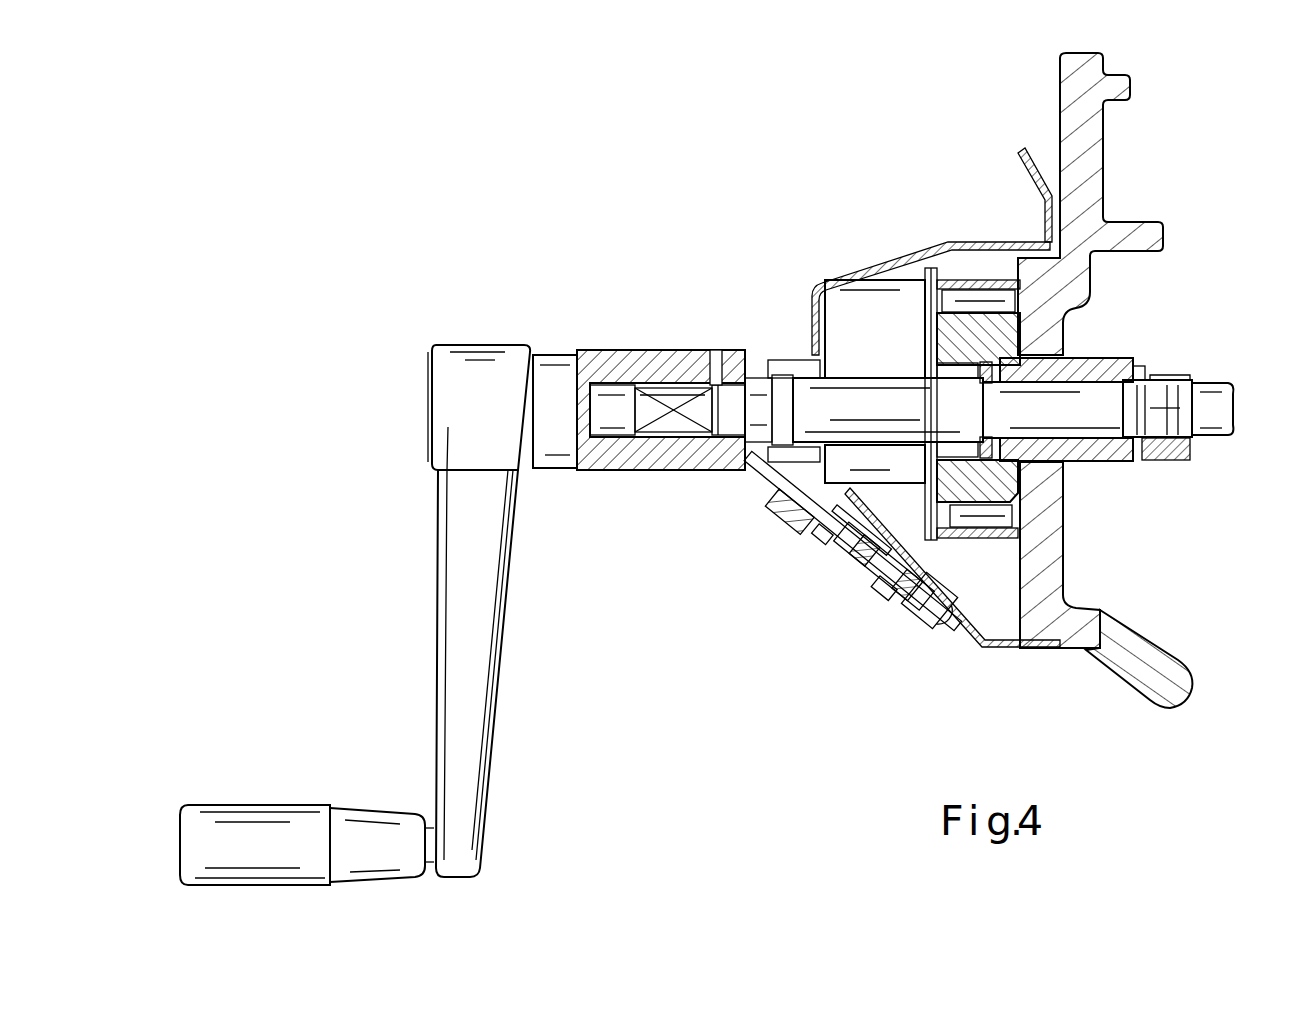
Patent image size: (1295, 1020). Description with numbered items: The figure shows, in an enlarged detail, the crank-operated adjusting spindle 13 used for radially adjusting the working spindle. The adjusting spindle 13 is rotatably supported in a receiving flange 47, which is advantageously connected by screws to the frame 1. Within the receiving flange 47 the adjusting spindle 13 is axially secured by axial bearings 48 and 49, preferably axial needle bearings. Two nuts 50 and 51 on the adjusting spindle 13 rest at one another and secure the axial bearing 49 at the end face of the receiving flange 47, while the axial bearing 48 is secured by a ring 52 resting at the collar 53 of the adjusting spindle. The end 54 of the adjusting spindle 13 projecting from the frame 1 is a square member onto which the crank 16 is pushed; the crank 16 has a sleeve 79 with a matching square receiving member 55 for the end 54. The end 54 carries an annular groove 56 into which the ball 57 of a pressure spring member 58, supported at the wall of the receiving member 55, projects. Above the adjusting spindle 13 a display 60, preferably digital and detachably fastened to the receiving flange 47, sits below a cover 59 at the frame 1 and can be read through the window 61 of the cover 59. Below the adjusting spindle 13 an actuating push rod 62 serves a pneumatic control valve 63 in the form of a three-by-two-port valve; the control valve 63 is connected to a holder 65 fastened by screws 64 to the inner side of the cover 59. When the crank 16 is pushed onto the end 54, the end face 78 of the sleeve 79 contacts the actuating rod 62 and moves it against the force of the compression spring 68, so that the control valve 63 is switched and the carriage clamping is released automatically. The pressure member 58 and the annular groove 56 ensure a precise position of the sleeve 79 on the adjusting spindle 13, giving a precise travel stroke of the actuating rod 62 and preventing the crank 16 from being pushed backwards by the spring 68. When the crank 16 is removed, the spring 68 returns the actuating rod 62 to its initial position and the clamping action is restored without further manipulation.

The frame 1 is at (1075, 105).
The adjusting spindle 13 is at (1207, 398).
The crank 16 is at (467, 567).
The receiving flange 47 is at (995, 488).
The axial bearing 48 is at (1063, 330).
The axial bearing 49 is at (1148, 462).
The nut 50 is at (1167, 463).
The nut 51 is at (1192, 452).
The ring 52 is at (937, 275).
The collar 53 is at (982, 396).
The end of the adjusting spindle 54 is at (661, 472).
The receiving member 55 is at (613, 385).
The annular groove 56 is at (723, 472).
The ball 57 is at (695, 352).
The pressure spring member 58 is at (717, 350).
The cover 59 is at (970, 242).
The display 60 is at (870, 300).
The window 61 is at (897, 282).
The actuating push rod 62 is at (806, 545).
The pneumatic control valve 63 is at (920, 585).
The screws 64 is at (840, 548).
The holder 65 is at (940, 600).
The compression spring 68 is at (882, 575).
The end face 78 is at (745, 355).
The sleeve 79 is at (598, 472).